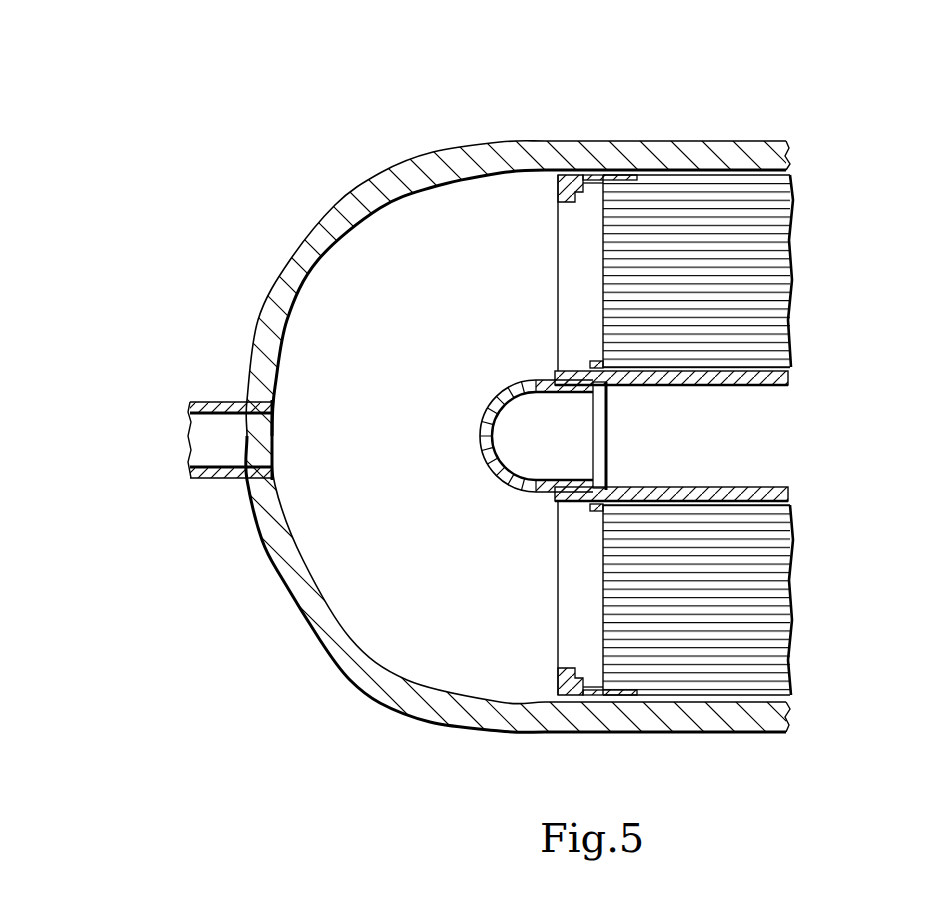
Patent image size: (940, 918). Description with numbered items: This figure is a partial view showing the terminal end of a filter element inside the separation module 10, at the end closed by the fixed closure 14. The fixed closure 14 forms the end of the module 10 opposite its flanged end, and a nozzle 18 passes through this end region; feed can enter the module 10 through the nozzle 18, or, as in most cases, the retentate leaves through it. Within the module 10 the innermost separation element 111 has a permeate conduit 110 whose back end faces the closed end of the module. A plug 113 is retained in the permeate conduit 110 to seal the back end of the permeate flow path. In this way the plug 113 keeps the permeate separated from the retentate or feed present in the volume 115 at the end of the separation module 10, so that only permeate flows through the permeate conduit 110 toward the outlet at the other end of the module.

The separation module 10 is at (665, 137).
The fixed closure 14 is at (381, 698).
The nozzle 18 is at (221, 402).
The permeate conduit 110 is at (721, 383).
The innermost separation element 111 is at (697, 238).
The plug 113 is at (531, 492).
The volume 115 is at (520, 284).